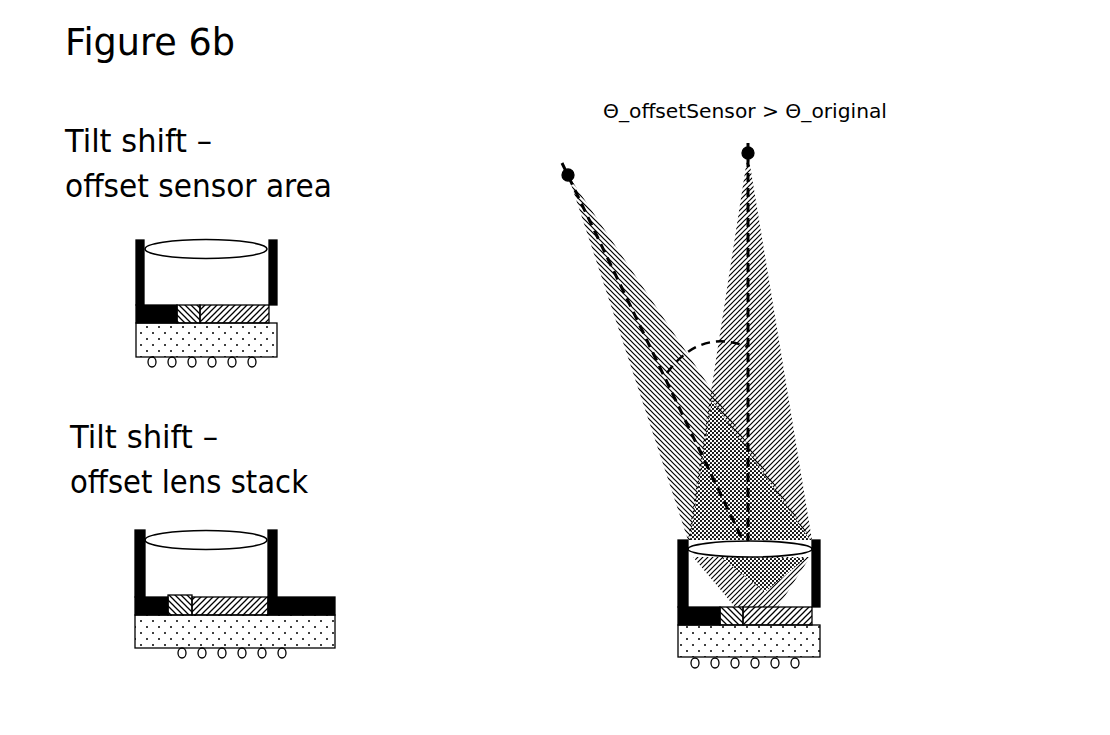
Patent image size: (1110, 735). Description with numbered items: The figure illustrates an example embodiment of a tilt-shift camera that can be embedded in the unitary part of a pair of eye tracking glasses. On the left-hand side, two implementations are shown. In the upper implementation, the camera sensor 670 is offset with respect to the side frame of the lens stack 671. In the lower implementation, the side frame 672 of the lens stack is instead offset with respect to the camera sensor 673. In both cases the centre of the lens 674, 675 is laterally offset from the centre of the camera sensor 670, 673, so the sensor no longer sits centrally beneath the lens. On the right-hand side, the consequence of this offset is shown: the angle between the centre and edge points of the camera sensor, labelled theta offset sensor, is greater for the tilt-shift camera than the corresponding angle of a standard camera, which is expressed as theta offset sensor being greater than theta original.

The camera sensor 670 is at (237, 325).
The side frame of the lens stack 671 is at (277, 272).
The side frame of the lens stack 672 is at (190, 550).
The camera sensor 673 is at (235, 597).
The lens 674 is at (198, 258).
The lens 675 is at (195, 548).